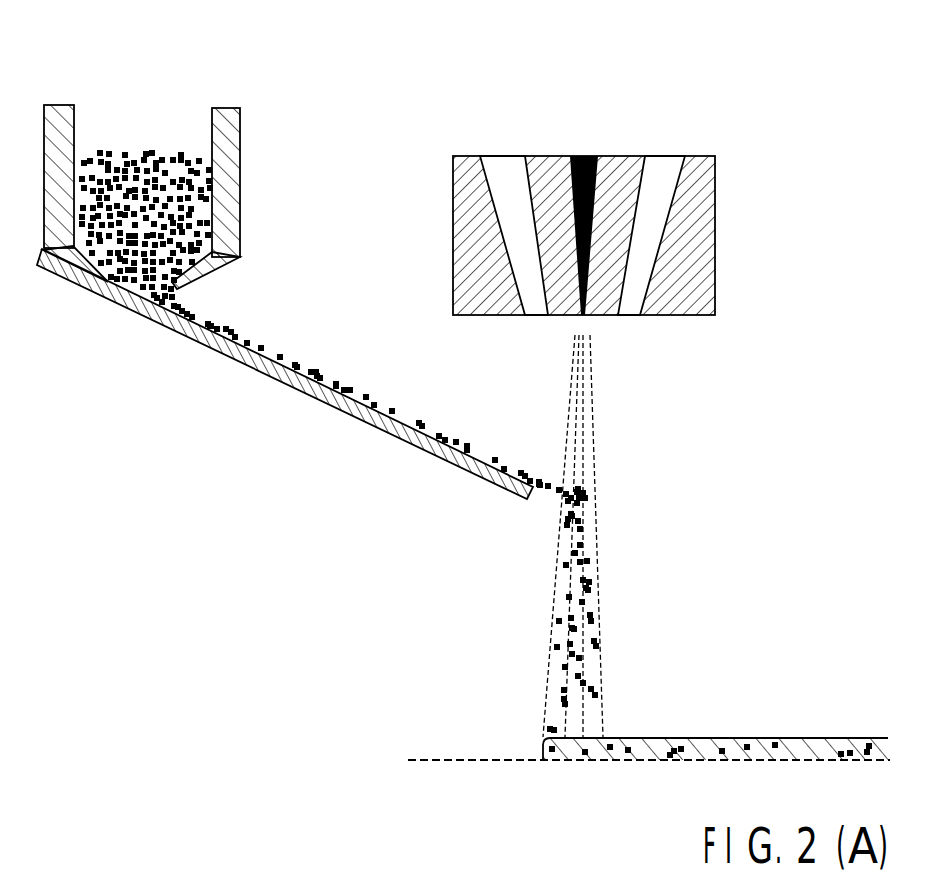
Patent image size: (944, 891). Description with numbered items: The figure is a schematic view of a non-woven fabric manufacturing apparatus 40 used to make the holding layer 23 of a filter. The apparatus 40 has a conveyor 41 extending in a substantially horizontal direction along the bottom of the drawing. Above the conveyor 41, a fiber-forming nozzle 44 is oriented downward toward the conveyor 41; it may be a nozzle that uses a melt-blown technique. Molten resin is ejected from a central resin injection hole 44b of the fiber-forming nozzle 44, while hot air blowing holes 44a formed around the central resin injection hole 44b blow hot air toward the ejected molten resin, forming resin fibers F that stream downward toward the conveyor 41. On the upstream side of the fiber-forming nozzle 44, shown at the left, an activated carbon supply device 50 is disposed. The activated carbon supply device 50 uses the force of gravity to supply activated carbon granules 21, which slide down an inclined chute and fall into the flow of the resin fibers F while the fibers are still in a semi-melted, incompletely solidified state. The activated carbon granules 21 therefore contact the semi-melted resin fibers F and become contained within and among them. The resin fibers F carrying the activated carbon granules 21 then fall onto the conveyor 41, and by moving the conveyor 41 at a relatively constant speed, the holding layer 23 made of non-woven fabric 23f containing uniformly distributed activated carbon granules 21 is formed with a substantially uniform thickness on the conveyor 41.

The activated carbon supply device 50 is at (260, 114).
The activated carbon granules 21 is at (147, 153).
The non-woven fabric manufacturing apparatus 40 is at (618, 211).
The fiber-forming nozzle 44 is at (727, 150).
The hot air blowing holes 44a is at (503, 210).
The central resin injection hole 44b is at (582, 316).
The resin fibers F is at (579, 457).
The conveyor 41 is at (505, 761).
The holding layer 23 is at (715, 688).
The non-woven fabric 23f is at (680, 745).